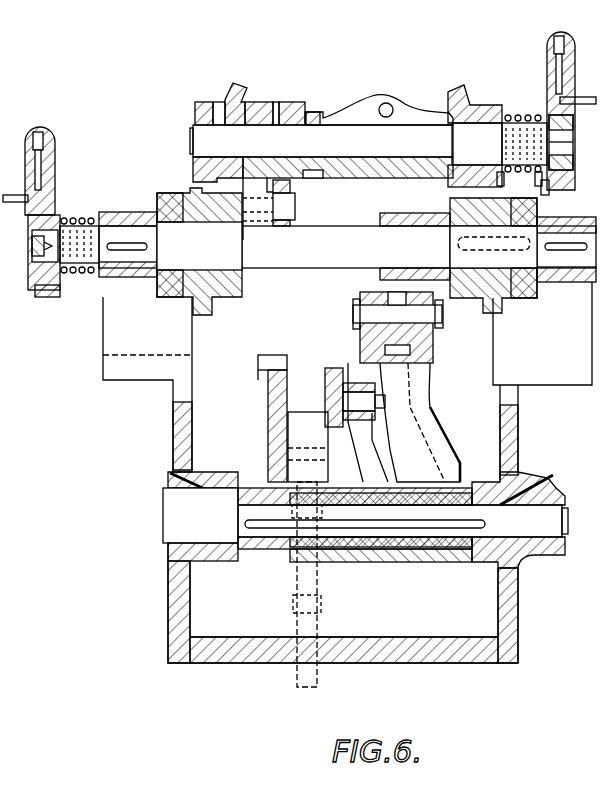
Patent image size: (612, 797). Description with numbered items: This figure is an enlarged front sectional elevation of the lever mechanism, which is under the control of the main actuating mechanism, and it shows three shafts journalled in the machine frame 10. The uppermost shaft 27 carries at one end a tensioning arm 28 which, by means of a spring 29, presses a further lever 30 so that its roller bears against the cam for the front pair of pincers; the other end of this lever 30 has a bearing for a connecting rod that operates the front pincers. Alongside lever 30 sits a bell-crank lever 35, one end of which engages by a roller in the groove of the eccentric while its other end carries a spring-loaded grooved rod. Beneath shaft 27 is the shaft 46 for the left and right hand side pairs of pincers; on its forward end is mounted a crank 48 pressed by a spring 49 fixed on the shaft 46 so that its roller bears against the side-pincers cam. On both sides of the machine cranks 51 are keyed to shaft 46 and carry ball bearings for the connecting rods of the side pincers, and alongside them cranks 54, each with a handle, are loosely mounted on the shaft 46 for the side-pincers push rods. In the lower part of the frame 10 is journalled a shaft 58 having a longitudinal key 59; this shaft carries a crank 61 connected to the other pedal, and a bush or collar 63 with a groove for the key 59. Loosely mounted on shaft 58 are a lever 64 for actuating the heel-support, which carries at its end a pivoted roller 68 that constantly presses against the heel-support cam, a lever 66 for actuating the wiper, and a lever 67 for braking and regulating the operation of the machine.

The frame 10 is at (176, 432).
The shaft 27 is at (226, 147).
The tensioning arm 28 is at (553, 66).
The spring 29 is at (508, 118).
The lever 30 is at (368, 118).
The bell-crank lever 35 is at (294, 112).
The shaft 46 is at (333, 258).
The crank 48 is at (415, 222).
The spring 49 is at (86, 222).
The cranks 51 is at (118, 214).
The cranks 54 is at (166, 198).
The shaft 58 is at (190, 535).
The longitudinal key 59 is at (272, 530).
The crank 61 is at (484, 548).
The bush or collar 63 is at (392, 552).
The lever 64 is at (440, 452).
The lever 66 is at (384, 560).
The lever 67 is at (320, 545).
The roller 68 is at (422, 345).